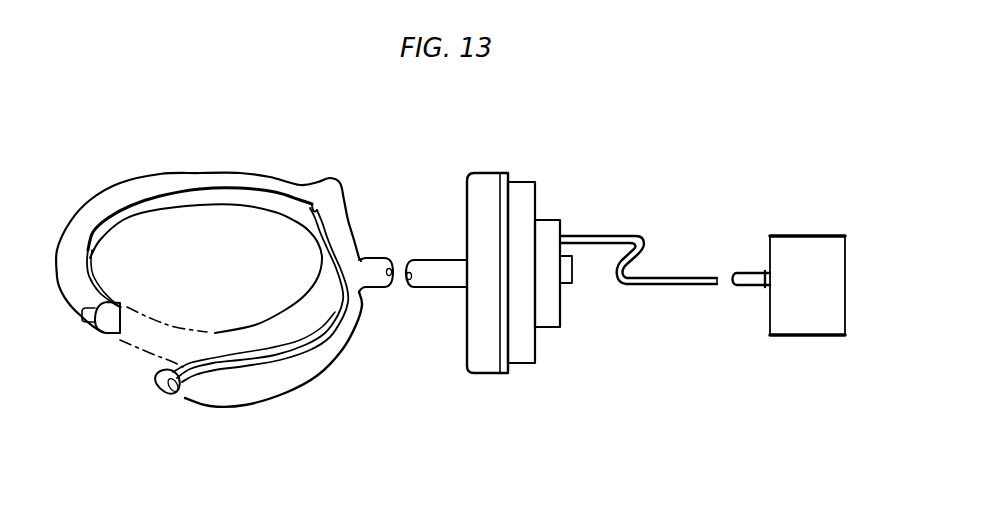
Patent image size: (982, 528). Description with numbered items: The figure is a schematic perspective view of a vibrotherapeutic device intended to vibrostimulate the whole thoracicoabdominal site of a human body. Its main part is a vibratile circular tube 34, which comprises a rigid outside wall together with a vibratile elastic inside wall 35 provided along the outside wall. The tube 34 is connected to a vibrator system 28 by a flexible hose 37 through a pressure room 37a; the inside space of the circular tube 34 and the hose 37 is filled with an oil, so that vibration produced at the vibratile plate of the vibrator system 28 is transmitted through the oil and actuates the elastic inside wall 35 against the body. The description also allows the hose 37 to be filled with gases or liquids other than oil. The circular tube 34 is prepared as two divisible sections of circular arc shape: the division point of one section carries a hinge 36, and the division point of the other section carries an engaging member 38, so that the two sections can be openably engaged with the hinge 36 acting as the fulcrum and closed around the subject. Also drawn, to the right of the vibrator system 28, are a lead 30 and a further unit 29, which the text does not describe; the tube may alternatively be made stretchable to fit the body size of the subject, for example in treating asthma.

The vibrator system 28 is at (530, 198).
The motor 29 is at (802, 340).
The lead wire 30 is at (655, 286).
The vibratile circular tube 34 is at (318, 377).
The vibratile elastic inside wall 35 is at (168, 190).
The hinge 36 is at (338, 187).
The flexible hose 37 is at (420, 291).
The pressure room 37a is at (480, 378).
The engaging member 38 is at (156, 393).